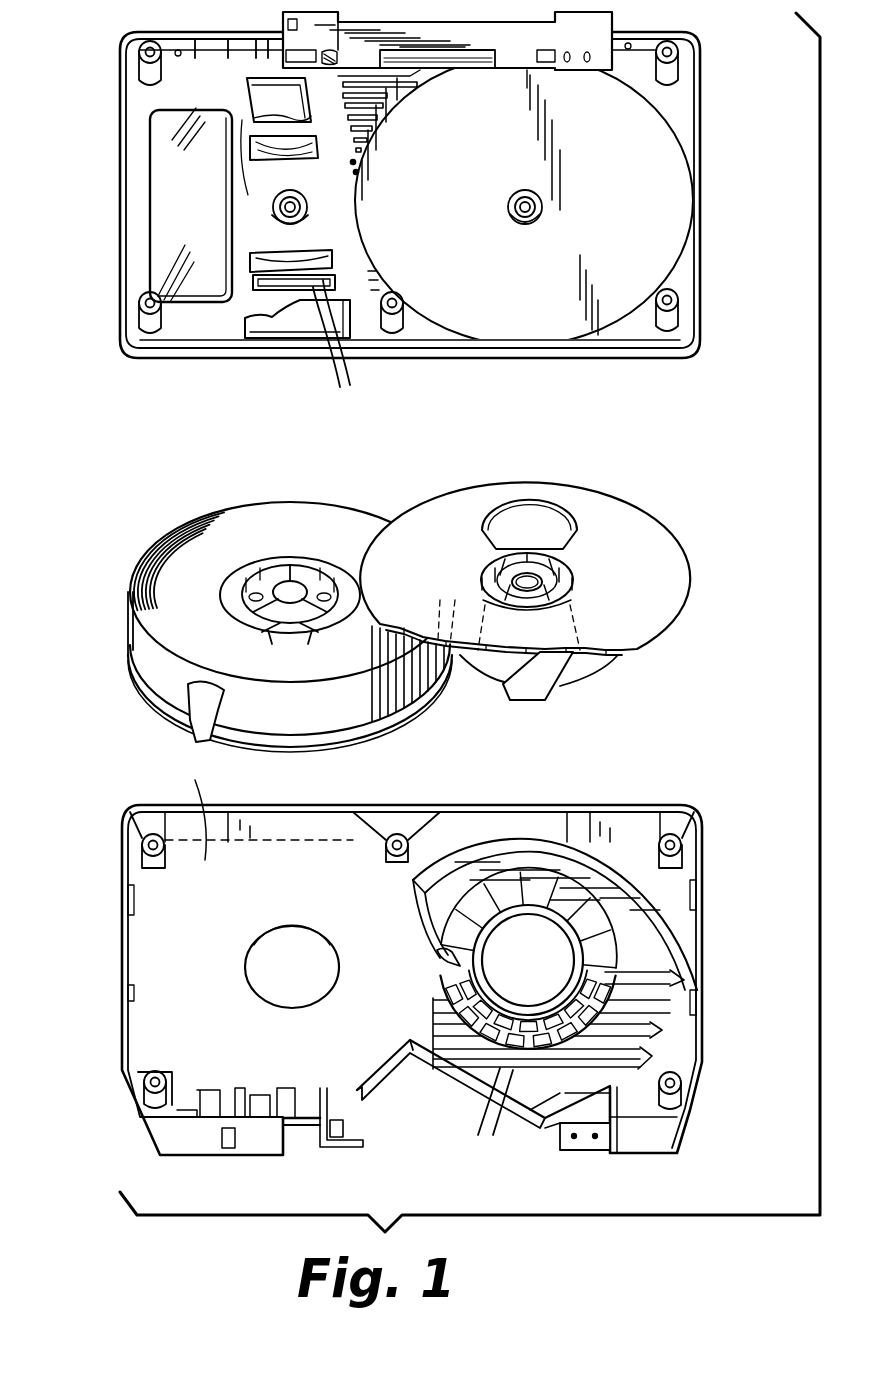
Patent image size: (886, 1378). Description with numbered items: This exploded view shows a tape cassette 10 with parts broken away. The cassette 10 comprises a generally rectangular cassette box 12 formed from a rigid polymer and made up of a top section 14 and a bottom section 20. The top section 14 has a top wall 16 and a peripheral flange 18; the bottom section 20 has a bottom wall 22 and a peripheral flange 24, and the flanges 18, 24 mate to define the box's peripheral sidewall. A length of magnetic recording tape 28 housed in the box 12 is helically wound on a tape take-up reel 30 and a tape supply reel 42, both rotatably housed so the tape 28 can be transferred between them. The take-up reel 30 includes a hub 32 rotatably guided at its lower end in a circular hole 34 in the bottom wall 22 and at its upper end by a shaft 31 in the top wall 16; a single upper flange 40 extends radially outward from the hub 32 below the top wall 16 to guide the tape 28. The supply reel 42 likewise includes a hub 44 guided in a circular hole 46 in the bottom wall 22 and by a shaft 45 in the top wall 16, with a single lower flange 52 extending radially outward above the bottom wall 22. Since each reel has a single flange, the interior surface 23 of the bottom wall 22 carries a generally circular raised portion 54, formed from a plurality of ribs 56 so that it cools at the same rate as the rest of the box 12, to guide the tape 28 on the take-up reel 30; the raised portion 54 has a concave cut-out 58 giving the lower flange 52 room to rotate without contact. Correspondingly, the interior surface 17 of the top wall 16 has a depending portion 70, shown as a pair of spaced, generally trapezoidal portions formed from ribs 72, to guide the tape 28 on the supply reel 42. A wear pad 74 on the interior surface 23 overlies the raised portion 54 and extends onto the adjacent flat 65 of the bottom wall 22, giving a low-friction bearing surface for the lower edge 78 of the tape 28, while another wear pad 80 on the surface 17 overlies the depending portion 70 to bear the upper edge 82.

The tape cassette 10 is at (90, 1140).
The cassette box 12 is at (703, 95).
The top section 14 is at (702, 136).
The top wall 16 is at (482, 285).
The interior surface of top wall 17 is at (582, 320).
The peripheral flange 18 is at (119, 216).
The bottom section 20 is at (706, 966).
The bottom wall 22 is at (384, 913).
The interior surface of bottom wall 23 is at (188, 811).
The peripheral flange 24 is at (121, 963).
The magnetic recording tape 28 is at (313, 649).
The tape take-up reel 30 is at (419, 627).
The shaft 31 is at (538, 216).
The hub 32 is at (548, 592).
The circular hole 34 is at (582, 955).
The upper flange 40 is at (612, 522).
The tape supply reel 42 is at (420, 718).
The hub 44 is at (284, 626).
The shaft 45 is at (303, 216).
The circular hole 46 is at (266, 990).
The lower flange 52 is at (276, 748).
The raised portion 54 is at (628, 1062).
The ribs 56 is at (485, 1124).
The concave cut-out 58 is at (448, 1004).
The flat 65 is at (436, 966).
The depending portion 70 is at (272, 150).
The ribs 72 is at (321, 342).
The wear pad 74 is at (555, 858).
The lower edge of magnetic tape 78 is at (196, 738).
The wear pad 80 is at (255, 86).
The upper edge of magnetic recording tape 82 is at (217, 688).